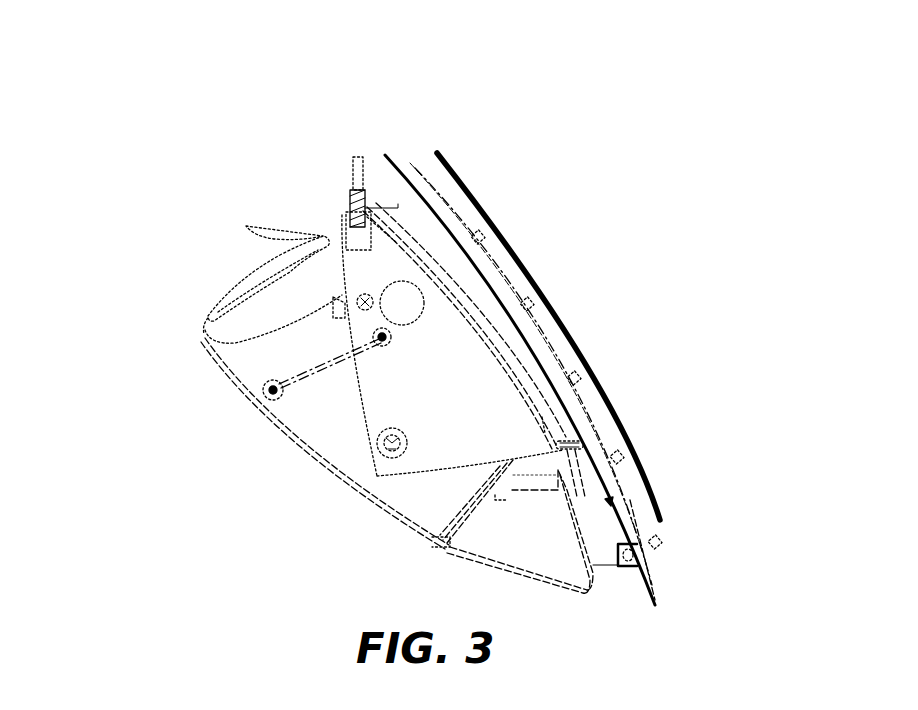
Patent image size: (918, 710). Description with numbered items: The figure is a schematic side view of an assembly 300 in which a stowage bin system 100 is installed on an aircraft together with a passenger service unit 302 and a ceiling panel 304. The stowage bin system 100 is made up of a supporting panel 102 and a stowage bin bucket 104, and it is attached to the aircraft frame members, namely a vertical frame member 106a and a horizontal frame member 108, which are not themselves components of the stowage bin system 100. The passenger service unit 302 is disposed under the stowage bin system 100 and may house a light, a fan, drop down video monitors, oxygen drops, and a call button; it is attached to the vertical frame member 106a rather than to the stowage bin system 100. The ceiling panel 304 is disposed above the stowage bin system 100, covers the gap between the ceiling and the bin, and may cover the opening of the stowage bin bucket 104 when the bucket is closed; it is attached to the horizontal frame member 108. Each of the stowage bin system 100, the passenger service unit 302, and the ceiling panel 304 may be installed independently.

The assembly 300 is at (703, 96).
The stowage bin system 100 is at (298, 480).
The supporting panel 102 is at (483, 342).
The stowage bin bucket 104 is at (268, 422).
The vertical frame member 106a is at (593, 412).
The horizontal frame member 108 is at (364, 195).
The passenger service unit 302 is at (547, 493).
The ceiling panel 304 is at (252, 268).